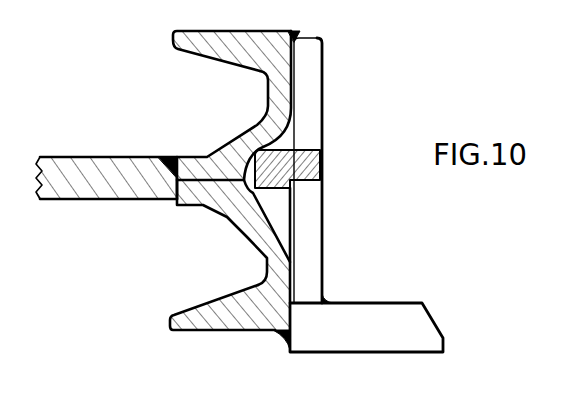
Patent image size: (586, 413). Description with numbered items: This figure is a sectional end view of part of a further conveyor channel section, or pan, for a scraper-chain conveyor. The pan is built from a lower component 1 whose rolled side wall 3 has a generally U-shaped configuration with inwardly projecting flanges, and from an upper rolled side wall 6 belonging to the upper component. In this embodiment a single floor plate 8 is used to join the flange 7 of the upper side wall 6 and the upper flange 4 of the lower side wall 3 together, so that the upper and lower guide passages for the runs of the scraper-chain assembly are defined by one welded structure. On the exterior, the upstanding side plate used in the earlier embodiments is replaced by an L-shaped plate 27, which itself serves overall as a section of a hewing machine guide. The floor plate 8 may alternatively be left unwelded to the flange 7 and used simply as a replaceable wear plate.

The lower component 1 is at (272, 204).
The side wall 3 is at (240, 320).
The upper flange 4 is at (230, 279).
The side wall 6 is at (215, 44).
The flange 7 is at (232, 105).
The floor plate 8 is at (93, 170).
The L-shaped plate 27 is at (324, 129).